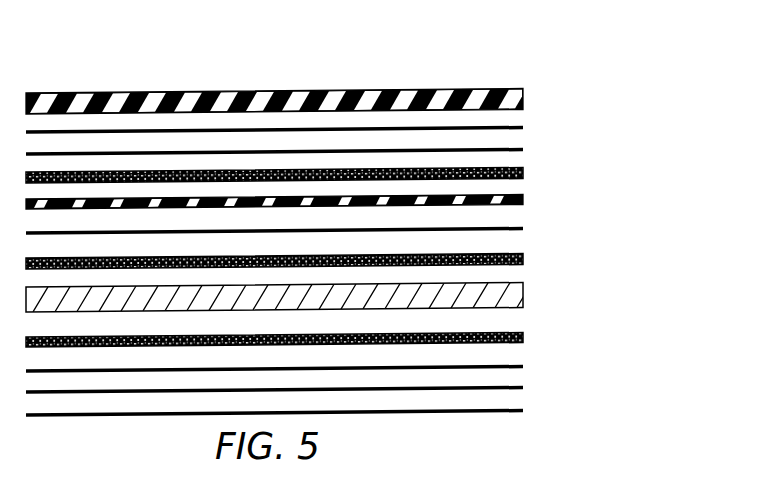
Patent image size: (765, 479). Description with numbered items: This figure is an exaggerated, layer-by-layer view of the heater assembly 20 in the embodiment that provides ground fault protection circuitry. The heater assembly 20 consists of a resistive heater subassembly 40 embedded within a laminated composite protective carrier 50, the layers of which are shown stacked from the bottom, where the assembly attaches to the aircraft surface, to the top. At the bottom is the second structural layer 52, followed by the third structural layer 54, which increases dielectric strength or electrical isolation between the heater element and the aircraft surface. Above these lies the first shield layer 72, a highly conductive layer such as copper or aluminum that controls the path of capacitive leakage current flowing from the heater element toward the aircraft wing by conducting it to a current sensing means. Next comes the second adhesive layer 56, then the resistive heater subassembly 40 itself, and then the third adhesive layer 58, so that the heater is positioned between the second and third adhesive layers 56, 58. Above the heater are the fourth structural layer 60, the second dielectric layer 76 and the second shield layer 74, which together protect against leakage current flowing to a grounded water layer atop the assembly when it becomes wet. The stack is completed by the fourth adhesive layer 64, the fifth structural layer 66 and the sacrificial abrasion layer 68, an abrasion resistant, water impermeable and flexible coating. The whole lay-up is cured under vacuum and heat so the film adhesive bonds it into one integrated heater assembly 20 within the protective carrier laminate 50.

The heater assembly 20 is at (248, 66).
The sacrificial abrasion layer 68 is at (523, 95).
The fifth structural layer 66 is at (523, 128).
The second shield layer 74 is at (523, 150).
The fourth adhesive layer 64 is at (523, 173).
The second dielectric layer 76 is at (523, 201).
The fourth structural layer 60 is at (523, 228).
The third adhesive layer 58 is at (523, 257).
The resistive heater subassembly 40 is at (523, 292).
The second adhesive layer 56 is at (523, 340).
The first shield layer 72 is at (523, 367).
The third structural layer 54 is at (523, 388).
The second structural layer 52 is at (523, 412).
The protective carrier laminate 50 is at (613, 43).